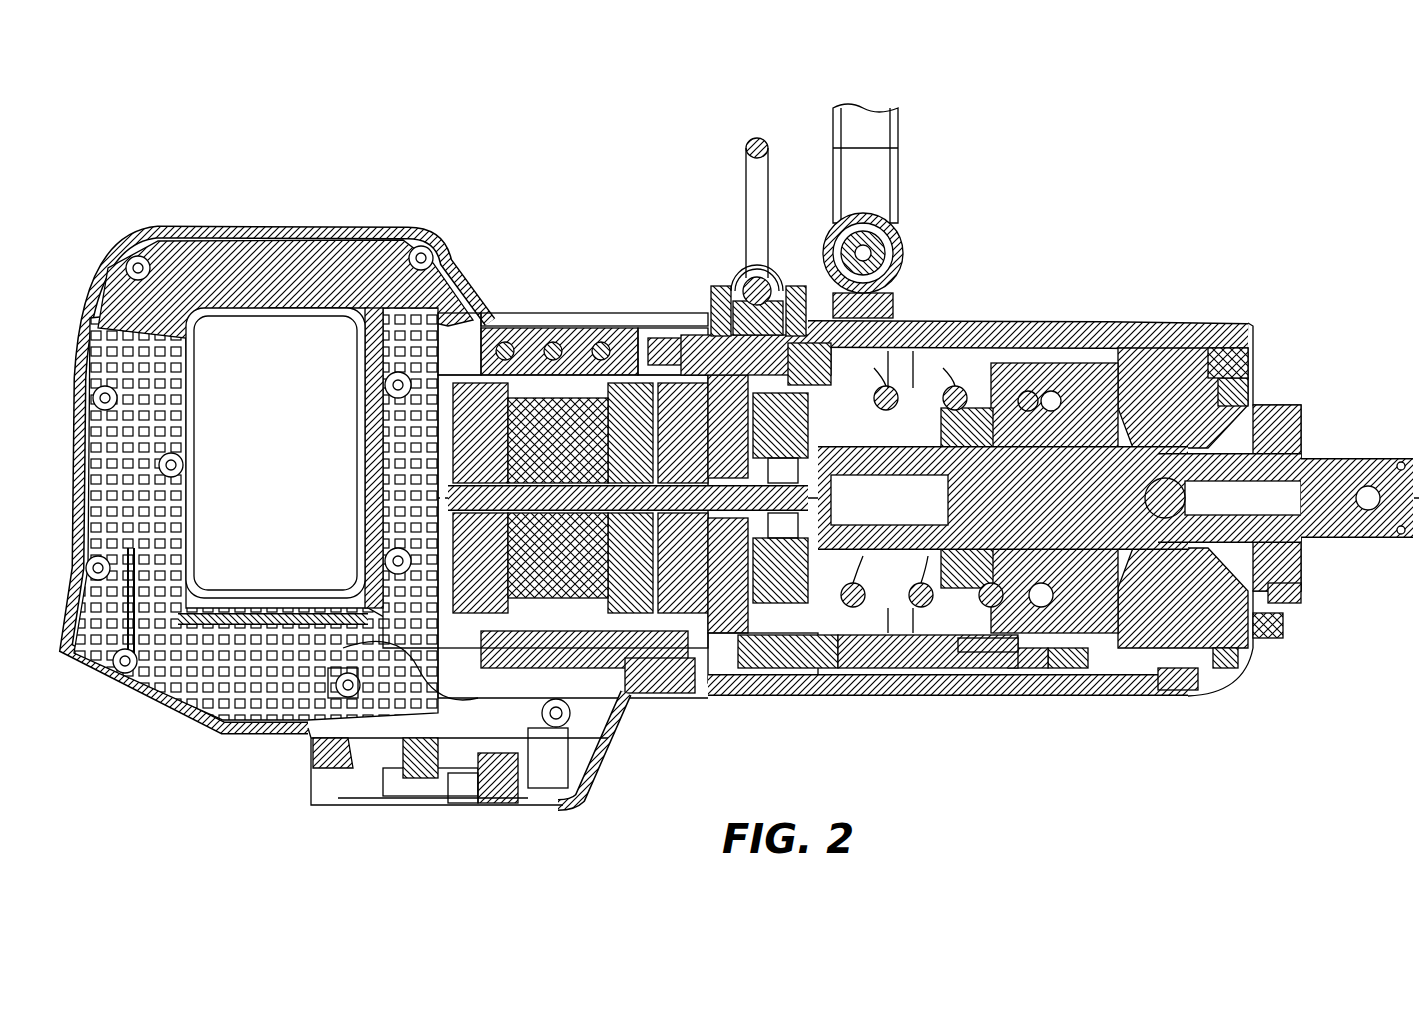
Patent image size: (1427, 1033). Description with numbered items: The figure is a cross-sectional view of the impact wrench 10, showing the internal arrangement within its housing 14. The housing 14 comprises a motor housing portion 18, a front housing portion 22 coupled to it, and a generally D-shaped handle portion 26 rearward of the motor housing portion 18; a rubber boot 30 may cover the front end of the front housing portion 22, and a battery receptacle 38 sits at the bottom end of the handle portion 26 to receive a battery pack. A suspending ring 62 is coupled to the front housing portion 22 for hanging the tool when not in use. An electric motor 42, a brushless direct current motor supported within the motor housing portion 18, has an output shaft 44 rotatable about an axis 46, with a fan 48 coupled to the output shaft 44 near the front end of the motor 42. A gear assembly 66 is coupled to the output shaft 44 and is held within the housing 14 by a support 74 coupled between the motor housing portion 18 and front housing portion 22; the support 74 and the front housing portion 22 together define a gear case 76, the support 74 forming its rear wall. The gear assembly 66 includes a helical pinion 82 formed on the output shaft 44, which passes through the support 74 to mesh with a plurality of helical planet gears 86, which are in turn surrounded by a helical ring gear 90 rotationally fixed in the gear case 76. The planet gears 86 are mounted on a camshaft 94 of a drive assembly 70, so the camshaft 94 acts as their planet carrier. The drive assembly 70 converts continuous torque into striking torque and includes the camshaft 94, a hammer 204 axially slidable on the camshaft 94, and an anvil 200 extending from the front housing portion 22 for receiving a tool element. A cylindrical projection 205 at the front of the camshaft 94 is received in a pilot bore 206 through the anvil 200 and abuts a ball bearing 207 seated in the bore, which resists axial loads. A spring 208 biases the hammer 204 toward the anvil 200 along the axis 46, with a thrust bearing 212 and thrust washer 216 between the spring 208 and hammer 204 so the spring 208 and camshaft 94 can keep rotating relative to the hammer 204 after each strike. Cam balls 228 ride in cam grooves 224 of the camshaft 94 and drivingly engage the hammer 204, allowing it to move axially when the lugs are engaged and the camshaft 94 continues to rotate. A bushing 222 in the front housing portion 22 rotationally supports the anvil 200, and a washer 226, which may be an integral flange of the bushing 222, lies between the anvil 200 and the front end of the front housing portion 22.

The impact wrench 10 is at (1060, 140).
The housing 14 is at (966, 290).
The motor housing portion 18 is at (640, 303).
The front housing portion 22 is at (1120, 400).
The handle portion 26 is at (242, 218).
The rubber boot 30 is at (1162, 330).
The battery receptacle 38 is at (413, 777).
The electric motor 42 is at (622, 688).
The output shaft 44 is at (533, 465).
The axis 46 is at (285, 492).
The fan 48 is at (655, 640).
The suspending ring 62 is at (748, 130).
The gear assembly 66 is at (890, 637).
The drive assembly 70 is at (971, 610).
The support 74 is at (667, 307).
The gear case 76 is at (709, 250).
The helical pinion 82 is at (885, 440).
The helical planet gears 86 is at (768, 290).
The helical ring gear 90 is at (790, 645).
The camshaft 94 is at (1162, 680).
The anvil 200 is at (1307, 540).
The hammer 204 is at (1085, 400).
The cylindrical projection 205 is at (1150, 467).
The pilot bore 206 is at (1212, 655).
The ball bearing 207 is at (1250, 622).
The spring 208 is at (857, 440).
The thrust bearing 212 is at (1062, 657).
The thrust washer 216 is at (1030, 648).
The bushing 222 is at (1265, 582).
The cam grooves 224 is at (985, 420).
The washer 226 is at (1145, 447).
The cam balls 228 is at (985, 565).